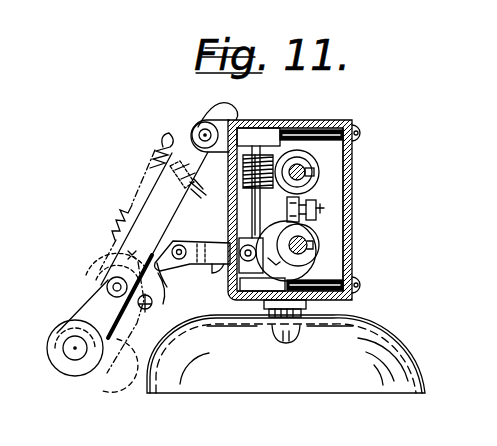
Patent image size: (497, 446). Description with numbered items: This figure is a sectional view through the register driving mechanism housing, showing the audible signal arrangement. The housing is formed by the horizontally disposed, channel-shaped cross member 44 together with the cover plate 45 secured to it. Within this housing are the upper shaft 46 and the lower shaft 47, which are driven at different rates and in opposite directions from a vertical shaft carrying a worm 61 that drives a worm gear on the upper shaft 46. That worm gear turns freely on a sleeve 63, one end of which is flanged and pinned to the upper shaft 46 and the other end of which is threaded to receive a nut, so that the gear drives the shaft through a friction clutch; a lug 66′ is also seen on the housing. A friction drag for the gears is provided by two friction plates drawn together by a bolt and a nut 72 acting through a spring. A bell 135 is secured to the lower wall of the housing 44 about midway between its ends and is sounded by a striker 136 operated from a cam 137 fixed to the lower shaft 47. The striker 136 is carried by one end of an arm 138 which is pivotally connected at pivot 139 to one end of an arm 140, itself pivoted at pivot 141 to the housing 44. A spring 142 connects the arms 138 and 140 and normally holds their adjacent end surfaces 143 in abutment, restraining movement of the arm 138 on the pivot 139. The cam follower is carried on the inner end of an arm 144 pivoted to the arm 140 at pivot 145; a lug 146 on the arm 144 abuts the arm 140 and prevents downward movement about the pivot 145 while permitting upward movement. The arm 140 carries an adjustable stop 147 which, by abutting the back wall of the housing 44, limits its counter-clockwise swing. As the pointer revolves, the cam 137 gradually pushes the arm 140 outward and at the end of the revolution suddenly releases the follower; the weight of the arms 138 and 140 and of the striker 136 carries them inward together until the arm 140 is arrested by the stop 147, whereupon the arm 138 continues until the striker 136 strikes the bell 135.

The cross member 44 is at (334, 121).
The cover plate 45 is at (349, 198).
The upper shaft 46 is at (313, 168).
The lower shaft 47 is at (308, 259).
The worm 61 is at (262, 127).
The sleeve 63 is at (314, 178).
The lug 66′ is at (356, 135).
The nut 72 is at (322, 219).
The bell 135 is at (286, 354).
The striker 136 is at (80, 380).
The cam 137 is at (306, 268).
The arm 138 is at (104, 302).
The pivot 139 is at (110, 283).
The arm 140 is at (150, 210).
The pivot 141 is at (200, 124).
The spring 142 is at (152, 166).
The end surfaces 143 is at (116, 242).
The arm 144 is at (221, 273).
The pivot 145 is at (181, 283).
The lug 146 is at (164, 306).
The adjustable stop 147 is at (192, 241).